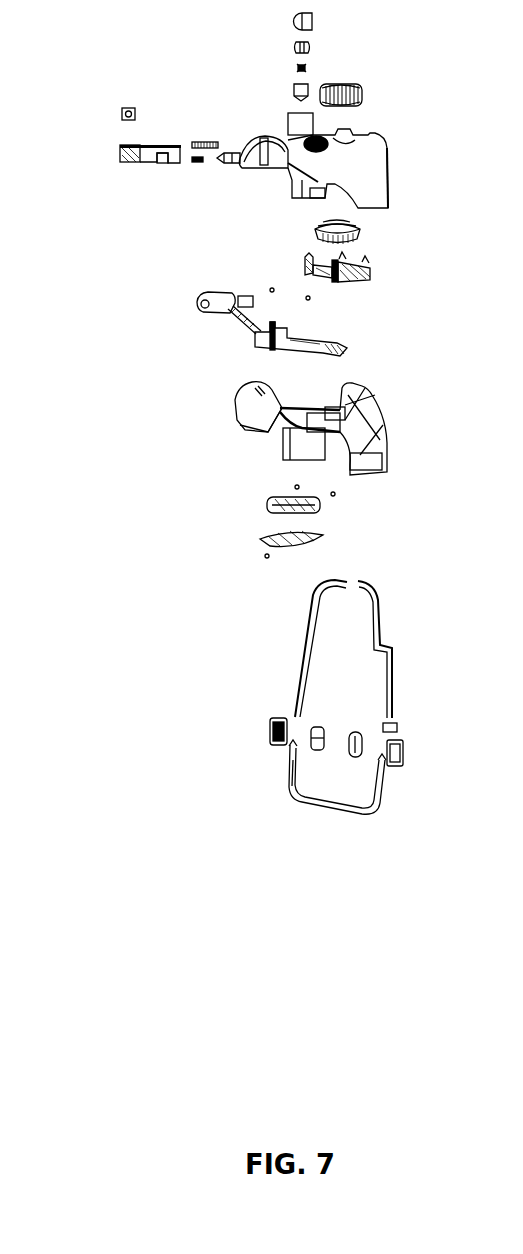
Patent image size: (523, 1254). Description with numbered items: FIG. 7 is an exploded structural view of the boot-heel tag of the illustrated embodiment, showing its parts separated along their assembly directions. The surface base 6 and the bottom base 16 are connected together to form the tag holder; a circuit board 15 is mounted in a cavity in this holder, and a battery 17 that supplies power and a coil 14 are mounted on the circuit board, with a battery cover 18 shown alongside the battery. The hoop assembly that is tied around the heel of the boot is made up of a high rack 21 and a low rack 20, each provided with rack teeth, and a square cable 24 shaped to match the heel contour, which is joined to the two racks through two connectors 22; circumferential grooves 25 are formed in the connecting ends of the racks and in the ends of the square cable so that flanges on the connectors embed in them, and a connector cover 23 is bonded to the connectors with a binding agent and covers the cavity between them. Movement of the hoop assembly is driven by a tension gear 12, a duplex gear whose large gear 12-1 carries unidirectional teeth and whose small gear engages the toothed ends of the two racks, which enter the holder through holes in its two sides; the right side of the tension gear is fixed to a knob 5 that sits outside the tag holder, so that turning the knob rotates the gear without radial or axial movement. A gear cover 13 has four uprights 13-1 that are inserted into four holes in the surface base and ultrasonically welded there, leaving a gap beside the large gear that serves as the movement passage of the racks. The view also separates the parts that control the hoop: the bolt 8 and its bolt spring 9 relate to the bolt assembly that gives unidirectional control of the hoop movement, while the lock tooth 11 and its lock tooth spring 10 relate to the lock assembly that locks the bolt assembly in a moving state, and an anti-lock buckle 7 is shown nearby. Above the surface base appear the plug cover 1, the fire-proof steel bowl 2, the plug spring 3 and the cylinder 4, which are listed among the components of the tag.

The plug cover 1 is at (293, 22).
The fire-proof steel bowl 2 is at (293, 49).
The plug spring 3 is at (297, 68).
The cylinder 4 is at (294, 97).
The knob 5 is at (368, 77).
The surface base 6 is at (285, 140).
The anti-lock buckle 7 is at (101, 123).
The bolt 8 is at (123, 164).
The bolt spring 9 is at (117, 181).
The lock tooth spring 10 is at (138, 189).
The lock tooth 11 is at (150, 210).
The tension gear 12 is at (358, 226).
The large gear 12-1 is at (320, 232).
The gear cover 13 is at (360, 283).
The uprights 13-1 is at (368, 263).
The coil 14 is at (159, 302).
The circuit board 15 is at (202, 331).
The bottom base 16 is at (222, 414).
The battery 17 is at (188, 477).
The battery cover 18 is at (263, 537).
The low rack 20 is at (312, 634).
The high rack 21 is at (387, 678).
The connector 22 is at (172, 703).
The connector cover 23 is at (288, 742).
The square cable 24 is at (290, 790).
The circumferential grooves 25 is at (286, 718).